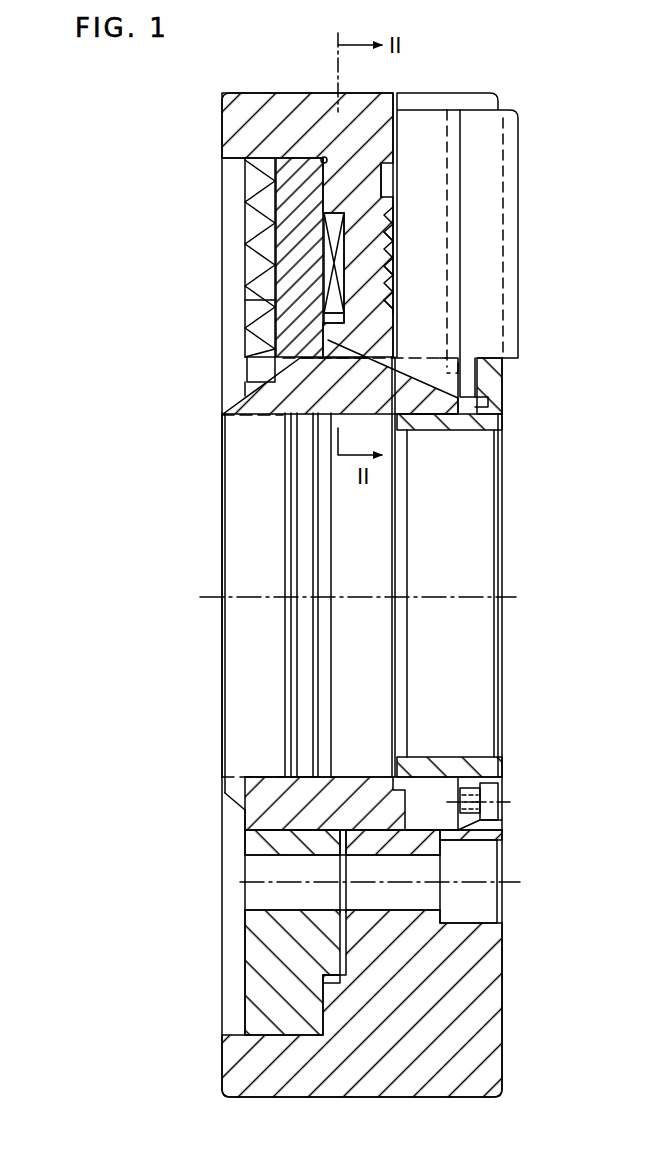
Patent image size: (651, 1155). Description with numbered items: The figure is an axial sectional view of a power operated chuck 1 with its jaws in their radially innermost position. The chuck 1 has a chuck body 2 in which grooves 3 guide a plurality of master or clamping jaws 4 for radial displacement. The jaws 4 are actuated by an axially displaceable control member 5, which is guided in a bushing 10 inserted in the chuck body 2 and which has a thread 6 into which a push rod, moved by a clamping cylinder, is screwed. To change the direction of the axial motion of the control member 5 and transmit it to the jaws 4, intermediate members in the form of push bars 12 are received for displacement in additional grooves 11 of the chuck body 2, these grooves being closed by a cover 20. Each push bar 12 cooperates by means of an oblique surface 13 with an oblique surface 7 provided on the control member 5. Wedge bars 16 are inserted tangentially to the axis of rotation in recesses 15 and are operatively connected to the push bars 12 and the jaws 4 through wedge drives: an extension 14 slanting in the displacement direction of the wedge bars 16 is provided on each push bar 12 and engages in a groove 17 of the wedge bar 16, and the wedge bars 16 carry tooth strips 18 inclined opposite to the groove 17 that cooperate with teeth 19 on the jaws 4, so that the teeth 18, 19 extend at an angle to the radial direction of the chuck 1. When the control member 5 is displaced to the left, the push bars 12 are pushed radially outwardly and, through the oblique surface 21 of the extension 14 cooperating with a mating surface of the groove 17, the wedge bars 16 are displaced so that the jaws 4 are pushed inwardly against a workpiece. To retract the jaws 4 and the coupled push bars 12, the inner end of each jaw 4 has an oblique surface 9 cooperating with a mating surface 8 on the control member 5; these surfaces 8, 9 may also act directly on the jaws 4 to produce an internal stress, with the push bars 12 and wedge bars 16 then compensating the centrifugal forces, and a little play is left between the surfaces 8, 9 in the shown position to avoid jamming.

The power operated chuck 1 is at (157, 514).
The chuck body 2 is at (267, 92).
The grooves 3 is at (400, 100).
The jaws 4 is at (515, 110).
The control member 5 is at (245, 402).
The thread 6 is at (275, 420).
The oblique surface 7 is at (262, 380).
The mating surface 8 is at (455, 338).
The oblique surface 9 is at (432, 400).
The bushing 10 is at (502, 410).
The additional grooves 11 is at (318, 187).
The push bars 12 is at (268, 297).
The oblique surface 13 is at (286, 413).
The extension 14 is at (330, 325).
The recesses 15 is at (394, 225).
The wedge bars 16 is at (394, 303).
The groove 17 is at (330, 244).
The tooth strips 18 is at (394, 273).
The teeth 19 is at (394, 240).
The cover 20 is at (253, 186).
The oblique surface 21 is at (377, 850).